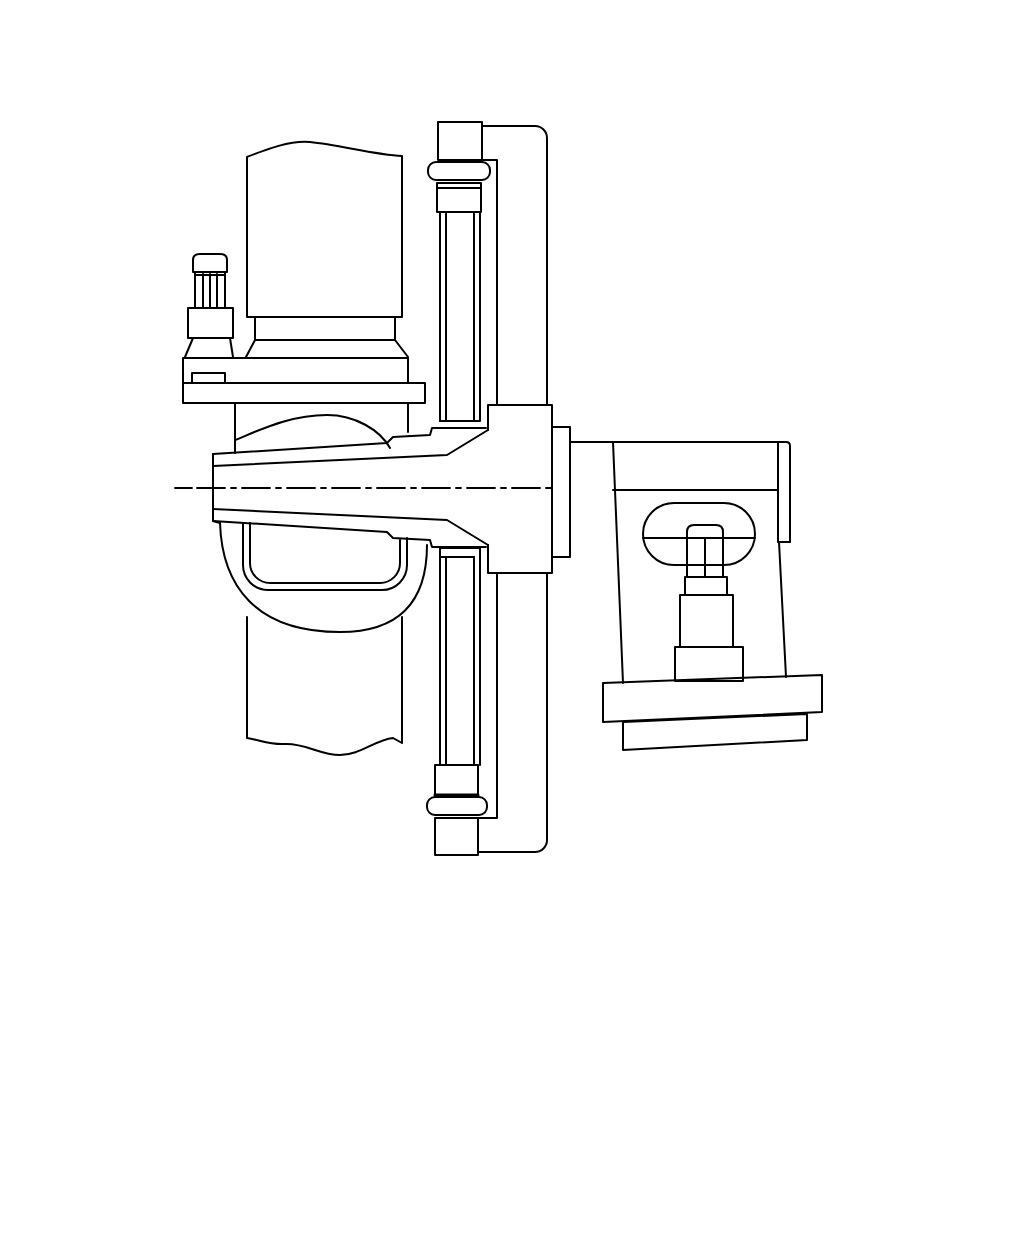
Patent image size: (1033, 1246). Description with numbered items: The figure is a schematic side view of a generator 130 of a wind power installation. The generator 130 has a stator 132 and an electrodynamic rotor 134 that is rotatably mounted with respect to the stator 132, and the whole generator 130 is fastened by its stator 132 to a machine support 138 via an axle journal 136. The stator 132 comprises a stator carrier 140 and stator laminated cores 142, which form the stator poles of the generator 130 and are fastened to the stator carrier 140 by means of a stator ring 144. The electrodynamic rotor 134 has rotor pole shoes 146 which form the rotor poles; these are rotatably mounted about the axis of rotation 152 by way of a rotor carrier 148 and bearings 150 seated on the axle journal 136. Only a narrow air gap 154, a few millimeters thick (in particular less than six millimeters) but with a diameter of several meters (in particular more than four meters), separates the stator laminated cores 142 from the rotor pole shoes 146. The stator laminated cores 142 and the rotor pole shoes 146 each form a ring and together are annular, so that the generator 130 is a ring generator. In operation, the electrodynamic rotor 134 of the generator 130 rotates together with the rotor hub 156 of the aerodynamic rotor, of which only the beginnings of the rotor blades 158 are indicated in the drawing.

The generator 130 is at (622, 90).
The stator 132 is at (578, 190).
The electrodynamic rotor 134 is at (410, 233).
The axle journal 136 is at (312, 488).
The machine support 138 is at (695, 460).
The stator carrier 140 is at (532, 340).
The stator laminated cores 142 is at (452, 168).
The stator ring 144 is at (456, 135).
The rotor pole shoes 146 is at (490, 805).
The rotor carrier 148 is at (467, 272).
The bearings 150 is at (234, 455).
The axis of rotation 152 is at (183, 492).
The air gap 154 is at (418, 781).
The rotor hub 156 is at (284, 598).
The rotor blades 158 is at (275, 227).